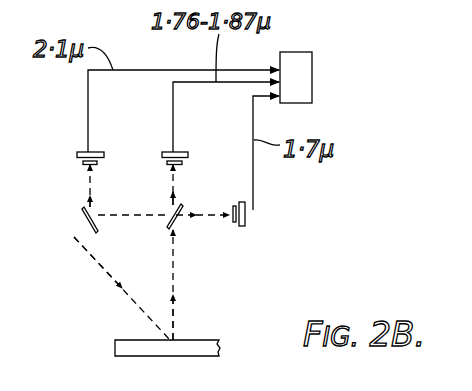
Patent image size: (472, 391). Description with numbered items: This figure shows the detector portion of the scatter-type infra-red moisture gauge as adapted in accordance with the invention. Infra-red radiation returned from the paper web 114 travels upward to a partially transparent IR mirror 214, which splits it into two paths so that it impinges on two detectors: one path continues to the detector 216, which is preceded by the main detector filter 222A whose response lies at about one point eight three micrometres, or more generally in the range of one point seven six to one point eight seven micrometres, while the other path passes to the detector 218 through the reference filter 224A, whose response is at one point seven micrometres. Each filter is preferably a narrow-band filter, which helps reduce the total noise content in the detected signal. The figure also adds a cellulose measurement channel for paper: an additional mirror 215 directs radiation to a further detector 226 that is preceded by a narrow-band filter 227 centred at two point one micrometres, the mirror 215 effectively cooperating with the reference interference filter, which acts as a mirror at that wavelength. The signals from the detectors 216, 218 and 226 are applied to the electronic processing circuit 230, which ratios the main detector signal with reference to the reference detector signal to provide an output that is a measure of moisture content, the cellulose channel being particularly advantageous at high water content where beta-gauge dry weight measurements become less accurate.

The web 114 is at (145, 341).
The partially transparent IR mirror 214 is at (170, 222).
The additional mirror 215 is at (88, 218).
The detector 216 is at (182, 151).
The detector 218 is at (247, 218).
The main detector filter 222A is at (174, 165).
The reference filter 224A is at (232, 222).
The detector 226 is at (83, 151).
The narrow-band filter 227 is at (85, 166).
The electronic processing circuit 230 is at (302, 76).